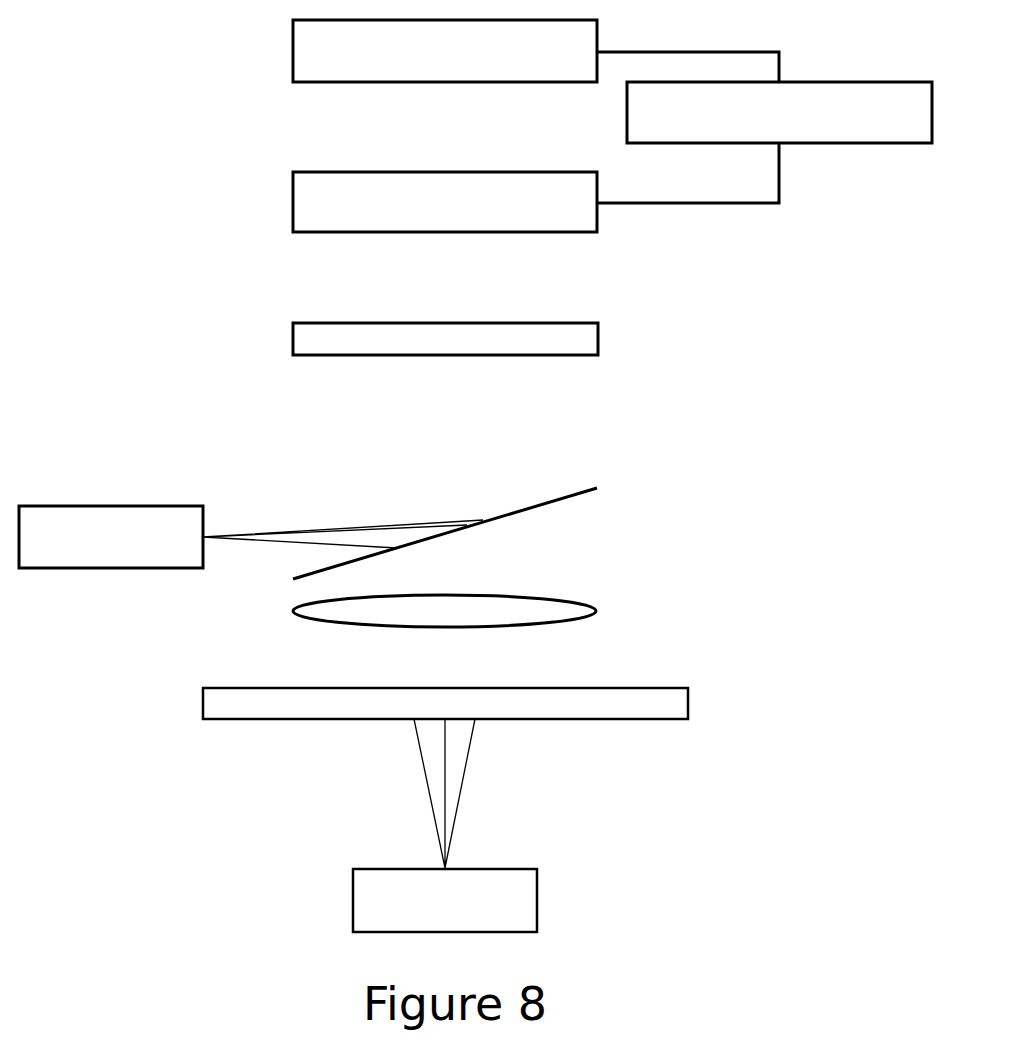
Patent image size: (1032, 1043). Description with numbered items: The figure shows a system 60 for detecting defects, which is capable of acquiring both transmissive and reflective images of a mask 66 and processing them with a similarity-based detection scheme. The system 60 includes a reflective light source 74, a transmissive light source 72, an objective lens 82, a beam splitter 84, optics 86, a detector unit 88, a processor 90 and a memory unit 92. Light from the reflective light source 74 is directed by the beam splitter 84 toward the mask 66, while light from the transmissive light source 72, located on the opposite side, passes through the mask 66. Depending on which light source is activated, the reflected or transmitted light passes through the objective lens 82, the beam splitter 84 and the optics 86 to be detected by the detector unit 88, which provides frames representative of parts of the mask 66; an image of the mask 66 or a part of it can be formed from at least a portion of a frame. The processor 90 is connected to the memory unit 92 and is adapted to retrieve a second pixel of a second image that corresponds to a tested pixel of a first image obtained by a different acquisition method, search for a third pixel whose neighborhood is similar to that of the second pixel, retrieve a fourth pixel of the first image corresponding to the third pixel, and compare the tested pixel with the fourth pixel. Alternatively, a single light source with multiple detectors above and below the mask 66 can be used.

The system 60 is at (475, 507).
The mask 66 is at (688, 703).
The transmissive light source 72 is at (445, 825).
The reflective light source 74 is at (251, 537).
The objective lens 82 is at (596, 611).
The beam splitter 84 is at (597, 488).
The optics 86 is at (598, 339).
The detector unit 88 is at (445, 202).
The processor 90 is at (536, 51).
The memory unit 92 is at (764, 142).